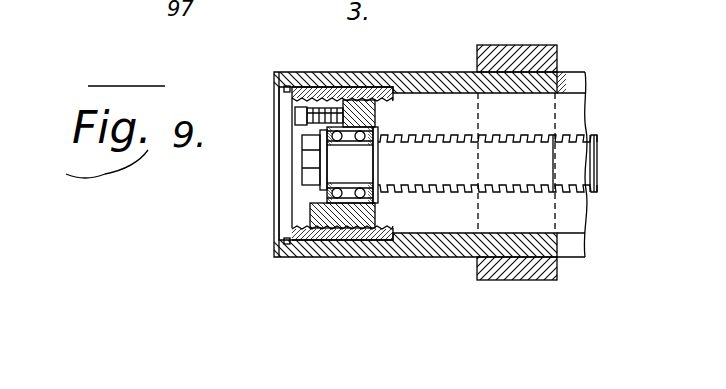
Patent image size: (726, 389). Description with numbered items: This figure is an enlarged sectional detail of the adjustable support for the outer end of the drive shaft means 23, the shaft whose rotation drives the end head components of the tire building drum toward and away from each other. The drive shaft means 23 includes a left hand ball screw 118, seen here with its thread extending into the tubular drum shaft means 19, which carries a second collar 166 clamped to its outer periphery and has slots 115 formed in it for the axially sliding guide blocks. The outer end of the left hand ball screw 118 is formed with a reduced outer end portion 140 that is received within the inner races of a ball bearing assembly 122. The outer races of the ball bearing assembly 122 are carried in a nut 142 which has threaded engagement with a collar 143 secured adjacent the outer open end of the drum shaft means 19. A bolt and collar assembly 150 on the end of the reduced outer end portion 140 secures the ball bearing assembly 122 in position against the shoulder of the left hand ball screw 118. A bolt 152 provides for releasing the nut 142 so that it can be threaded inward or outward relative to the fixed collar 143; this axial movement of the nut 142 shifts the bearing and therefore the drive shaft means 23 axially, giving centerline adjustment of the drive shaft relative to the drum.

The tubular drum shaft means 19 is at (430, 71).
The second collar 166 is at (535, 52).
The slots 115 is at (565, 76).
The collar 143 is at (313, 72).
The nut 142 is at (326, 212).
The ball bearing assembly 122 is at (362, 126).
The reduced outer end portion 140 is at (358, 158).
The left hand ball screw 118 is at (592, 150).
The drive shaft means 23 is at (567, 132).
The bolt 152 is at (300, 115).
The bolt and collar assembly 150 is at (294, 165).